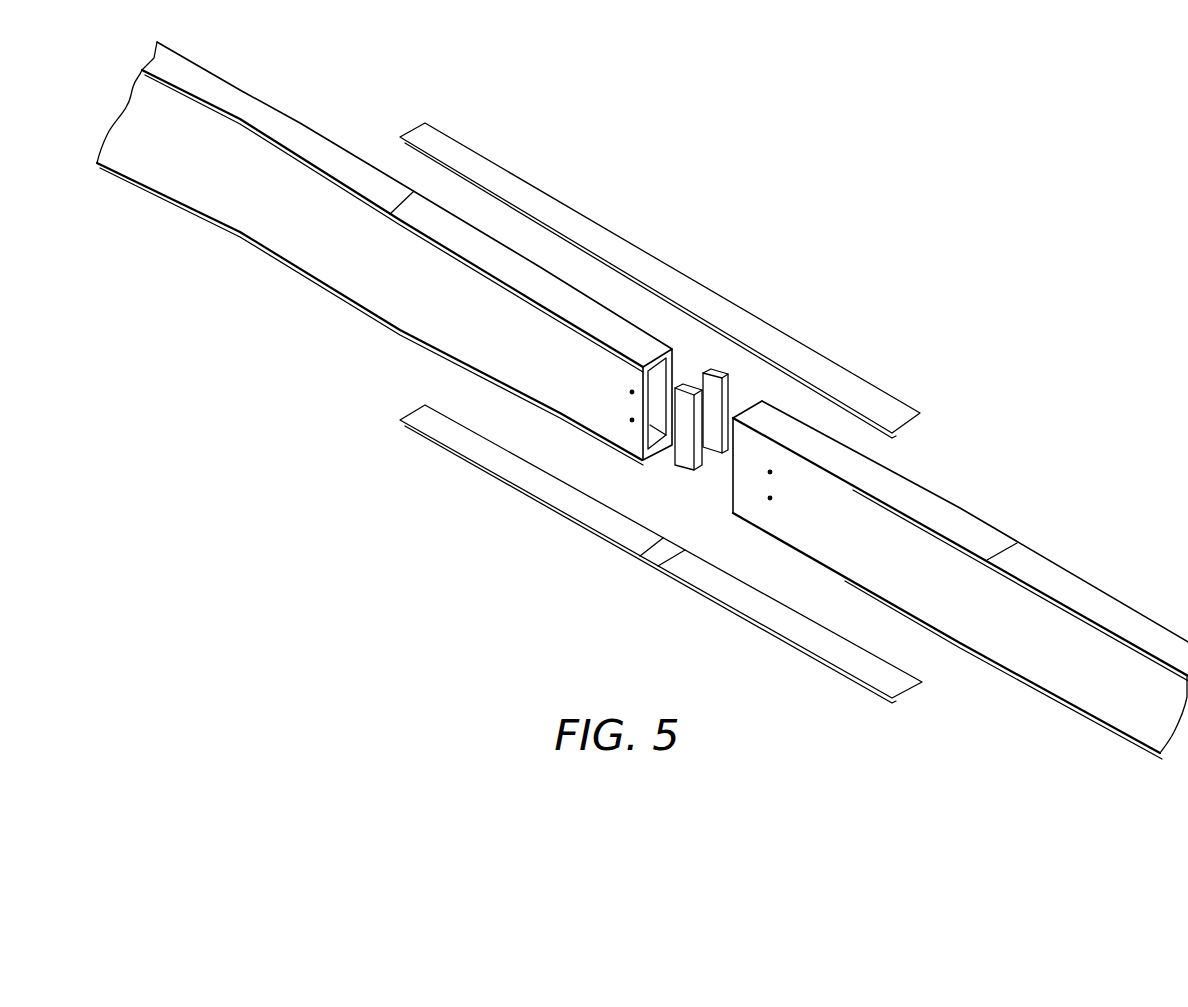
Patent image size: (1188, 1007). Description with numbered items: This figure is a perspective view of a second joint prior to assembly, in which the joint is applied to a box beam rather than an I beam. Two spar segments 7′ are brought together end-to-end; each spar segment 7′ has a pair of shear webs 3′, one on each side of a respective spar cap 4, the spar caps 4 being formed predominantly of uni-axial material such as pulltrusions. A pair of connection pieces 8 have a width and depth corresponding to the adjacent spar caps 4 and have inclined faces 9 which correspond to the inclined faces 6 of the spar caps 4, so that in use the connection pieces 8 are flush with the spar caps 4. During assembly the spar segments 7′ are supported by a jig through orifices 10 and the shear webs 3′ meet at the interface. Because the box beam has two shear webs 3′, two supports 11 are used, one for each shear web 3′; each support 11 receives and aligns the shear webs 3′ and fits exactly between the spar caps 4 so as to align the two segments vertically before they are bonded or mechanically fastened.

The shear web 3′ is at (396, 293).
The spar cap 4 is at (249, 97).
The inclined face 6 is at (563, 305).
The spar segment 7′ is at (339, 116).
The connection piece 8 is at (700, 291).
The inclined face 9 is at (516, 462).
The orifice 10 is at (632, 420).
The support 11 is at (735, 396).